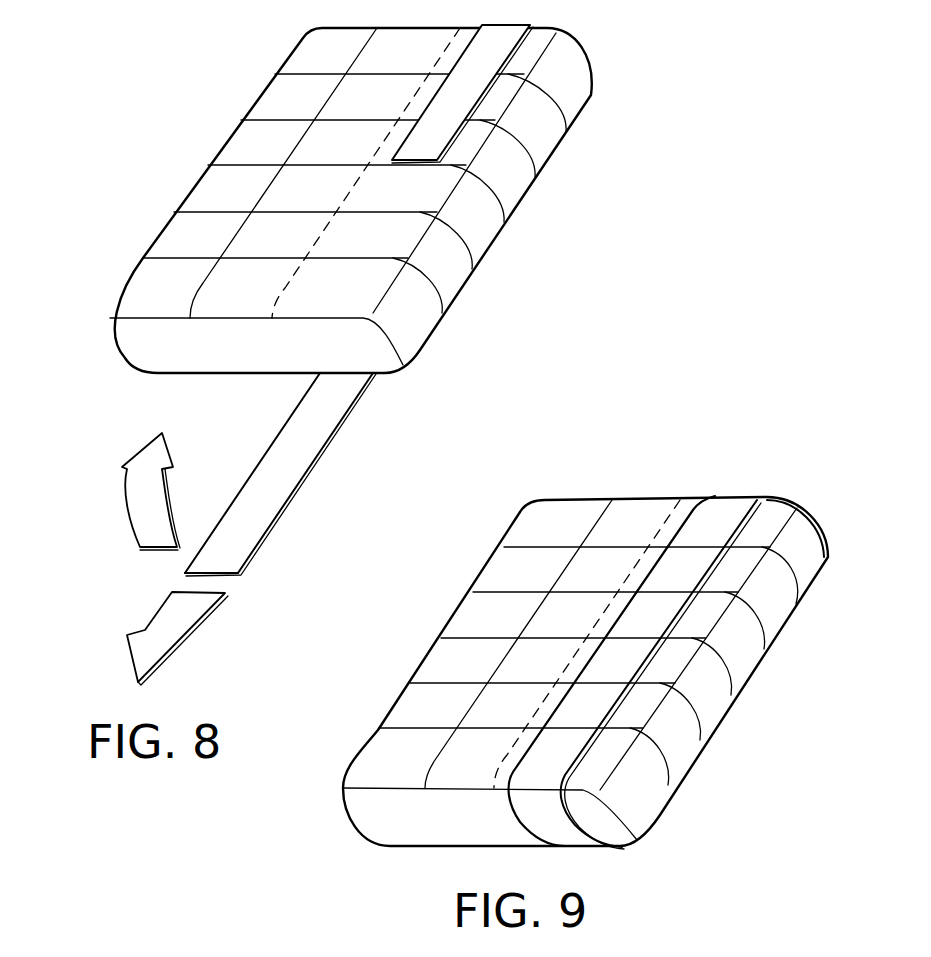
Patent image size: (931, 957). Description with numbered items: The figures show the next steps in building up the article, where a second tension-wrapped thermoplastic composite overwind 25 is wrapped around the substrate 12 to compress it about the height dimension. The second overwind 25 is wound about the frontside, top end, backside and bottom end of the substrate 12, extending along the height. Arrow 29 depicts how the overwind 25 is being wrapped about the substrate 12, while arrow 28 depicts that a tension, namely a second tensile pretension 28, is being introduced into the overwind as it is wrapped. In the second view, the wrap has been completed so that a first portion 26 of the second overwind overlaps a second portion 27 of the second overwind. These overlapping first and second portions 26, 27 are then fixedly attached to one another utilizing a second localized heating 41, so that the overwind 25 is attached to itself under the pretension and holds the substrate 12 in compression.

In FIG. 8, the device body 12 is at (143, 338).
In FIG. 9, the device body 12 is at (380, 800).
In FIG. 8, the second tension-wrapped thermoplastic composite overwind 25 is at (305, 427).
In FIG. 9, the second tension-wrapped thermoplastic composite overwind 25 is at (610, 678).
In FIG. 8, the first portion of the second overwind 26 is at (225, 557).
In FIG. 9, the first portion of the second overwind 26 is at (730, 674).
In FIG. 8, the second portion of the second overwind 27 is at (435, 123).
In FIG. 9, the second portion of the second overwind 27 is at (730, 674).
In FIG. 8, the second tensile pretension 28 is at (188, 610).
In FIG. 8, the arrow 29 is at (147, 503).
In FIG. 9, the second localized heating 41 is at (670, 595).